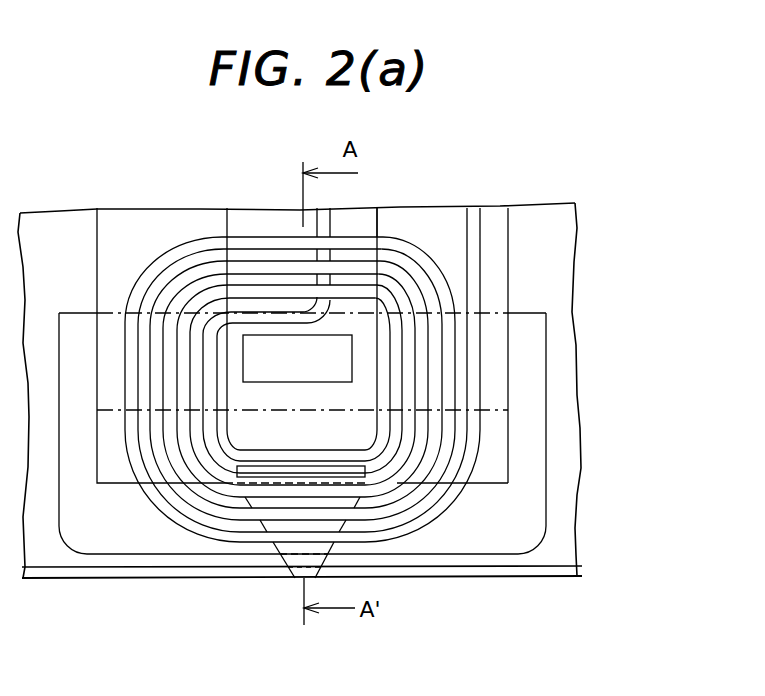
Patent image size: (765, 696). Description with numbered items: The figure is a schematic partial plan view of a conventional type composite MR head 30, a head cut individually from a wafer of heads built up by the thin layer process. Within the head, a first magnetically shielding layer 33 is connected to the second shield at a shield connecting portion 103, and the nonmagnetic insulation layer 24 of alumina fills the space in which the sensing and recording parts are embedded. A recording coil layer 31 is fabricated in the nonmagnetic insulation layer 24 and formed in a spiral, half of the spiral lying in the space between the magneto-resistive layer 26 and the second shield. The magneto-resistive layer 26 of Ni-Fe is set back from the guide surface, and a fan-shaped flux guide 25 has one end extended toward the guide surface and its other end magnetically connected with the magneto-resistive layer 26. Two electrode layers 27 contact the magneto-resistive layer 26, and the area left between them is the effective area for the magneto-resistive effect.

The conventional type composite MR head 30 is at (590, 188).
The nonmagnetic insulation layer 24 is at (530, 232).
The electrode layers 27 is at (116, 222).
The magneto-resistive layer 26 is at (106, 492).
The first magnetically shielding layer 33 is at (164, 544).
The shield connecting portion 103 is at (258, 350).
The flux guide 25 is at (362, 493).
The recording coil layer 31 is at (420, 262).